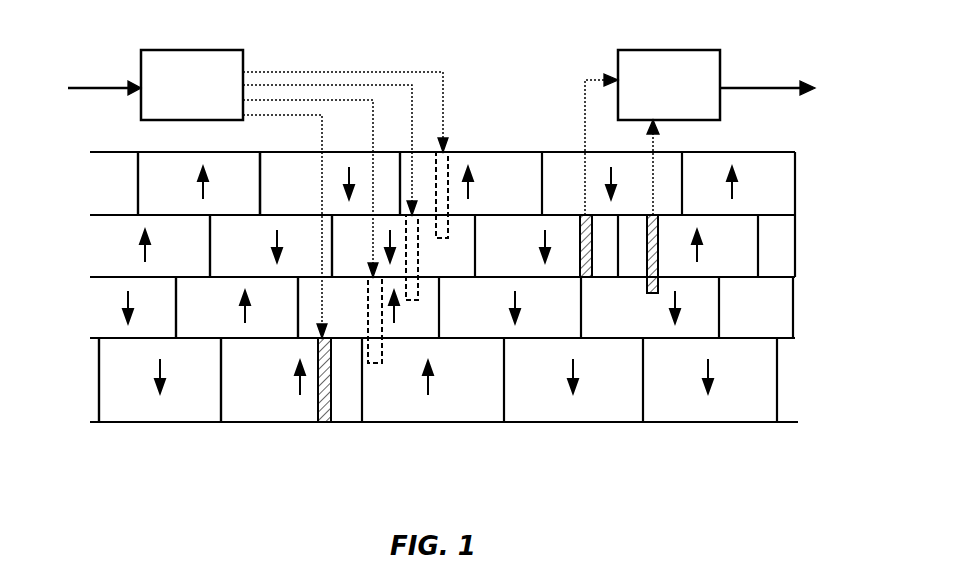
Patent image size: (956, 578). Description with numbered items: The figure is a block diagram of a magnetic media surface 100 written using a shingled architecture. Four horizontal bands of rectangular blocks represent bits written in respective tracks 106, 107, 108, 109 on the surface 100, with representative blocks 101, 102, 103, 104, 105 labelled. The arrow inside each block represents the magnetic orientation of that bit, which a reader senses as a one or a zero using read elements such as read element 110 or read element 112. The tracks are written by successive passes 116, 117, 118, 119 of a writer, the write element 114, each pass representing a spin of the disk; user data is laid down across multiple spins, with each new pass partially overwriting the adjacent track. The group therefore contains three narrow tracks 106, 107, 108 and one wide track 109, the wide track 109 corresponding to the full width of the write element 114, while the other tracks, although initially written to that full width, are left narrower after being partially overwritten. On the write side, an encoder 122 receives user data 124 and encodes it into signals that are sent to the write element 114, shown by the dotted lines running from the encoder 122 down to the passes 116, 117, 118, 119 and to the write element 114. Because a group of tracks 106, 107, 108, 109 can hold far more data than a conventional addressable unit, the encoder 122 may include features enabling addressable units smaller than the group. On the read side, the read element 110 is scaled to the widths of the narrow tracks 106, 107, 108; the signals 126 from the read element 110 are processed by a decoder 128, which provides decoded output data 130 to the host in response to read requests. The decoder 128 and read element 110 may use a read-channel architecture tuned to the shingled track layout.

The magnetic media surface 100 is at (727, 454).
The block 101 is at (199, 183).
The block 102 is at (330, 183).
The block 103 is at (271, 246).
The block 104 is at (237, 307).
The block 105 is at (160, 380).
The narrow track 106 is at (82, 152).
The narrow track 107 is at (82, 215).
The narrow track 108 is at (82, 277).
The wide track 109 is at (82, 338).
The read element 110 is at (582, 213).
The read element 112 is at (659, 213).
The write element 114 is at (318, 424).
The pass 116 is at (420, 72).
The pass 117 is at (330, 86).
The pass 118 is at (355, 100).
The pass 119 is at (270, 115).
The encoder 122 is at (213, 50).
The user data 124 is at (92, 50).
The signals 126 is at (583, 78).
The decoder 128 is at (632, 50).
The output data 130 is at (782, 62).